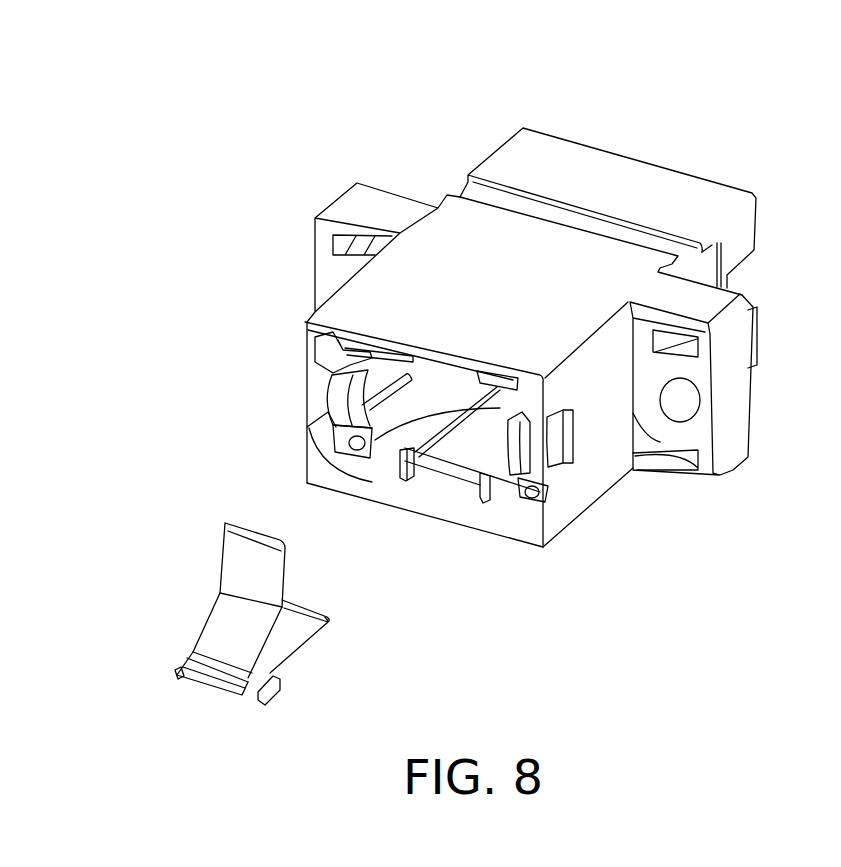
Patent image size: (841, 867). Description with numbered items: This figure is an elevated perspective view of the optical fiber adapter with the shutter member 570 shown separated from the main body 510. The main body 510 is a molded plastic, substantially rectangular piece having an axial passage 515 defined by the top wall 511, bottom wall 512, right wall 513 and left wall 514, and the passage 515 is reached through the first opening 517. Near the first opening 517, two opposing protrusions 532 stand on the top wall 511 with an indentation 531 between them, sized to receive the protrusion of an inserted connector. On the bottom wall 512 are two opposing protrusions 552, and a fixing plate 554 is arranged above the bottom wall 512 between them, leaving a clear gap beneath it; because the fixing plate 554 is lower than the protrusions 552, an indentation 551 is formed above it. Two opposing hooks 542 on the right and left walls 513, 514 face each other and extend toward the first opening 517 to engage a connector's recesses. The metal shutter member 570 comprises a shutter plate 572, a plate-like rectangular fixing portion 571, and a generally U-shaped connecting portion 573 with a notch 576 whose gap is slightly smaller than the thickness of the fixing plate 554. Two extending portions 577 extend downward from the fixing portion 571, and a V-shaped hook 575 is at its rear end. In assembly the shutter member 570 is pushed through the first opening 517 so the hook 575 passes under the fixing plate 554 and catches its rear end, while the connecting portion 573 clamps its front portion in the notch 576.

The main body 510 is at (258, 130).
The top wall 511 is at (463, 273).
The bottom wall 512 is at (383, 498).
The right wall 513 is at (636, 455).
The left wall 514 is at (317, 471).
The passage 515 is at (362, 463).
The first opening 517 is at (560, 483).
The indentation 531 is at (450, 373).
The protrusions 532 is at (383, 342).
The hooks 542 is at (333, 403).
The indentation 551 is at (453, 447).
The protrusions 552 is at (412, 452).
The fixing plate 554 is at (468, 435).
The shutter member 570 is at (127, 507).
The fixing portion 571 is at (290, 633).
The shutter plate 572 is at (227, 529).
The connecting portion 573 is at (203, 680).
The V-shaped hook 575 is at (329, 623).
The notch 576 is at (245, 690).
The extending portions 577 is at (173, 673).